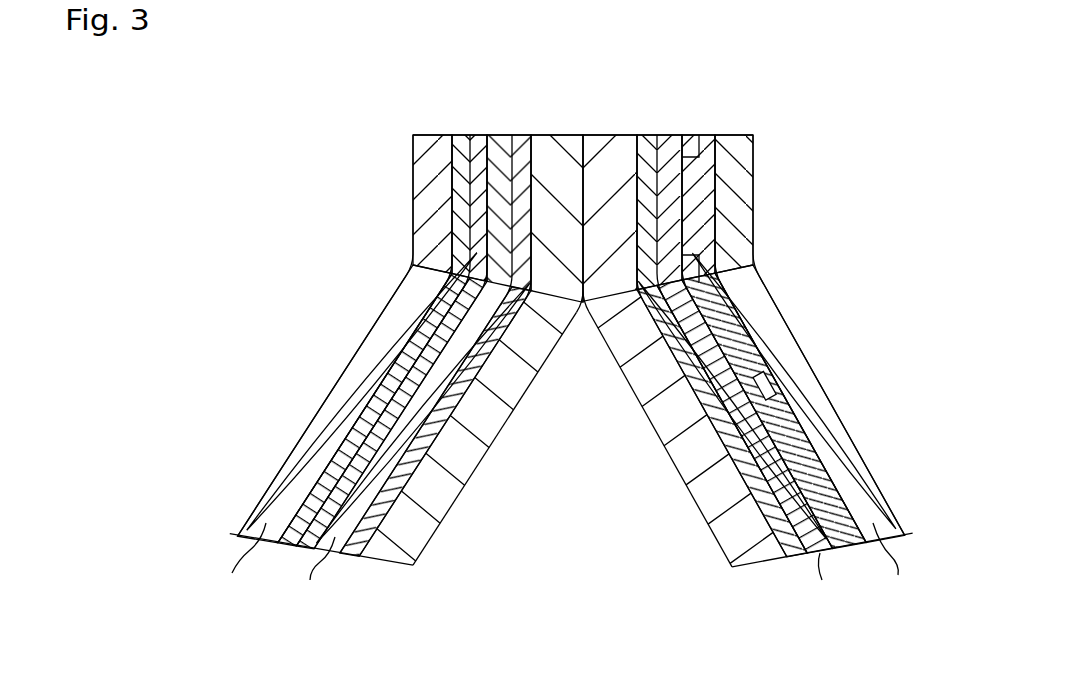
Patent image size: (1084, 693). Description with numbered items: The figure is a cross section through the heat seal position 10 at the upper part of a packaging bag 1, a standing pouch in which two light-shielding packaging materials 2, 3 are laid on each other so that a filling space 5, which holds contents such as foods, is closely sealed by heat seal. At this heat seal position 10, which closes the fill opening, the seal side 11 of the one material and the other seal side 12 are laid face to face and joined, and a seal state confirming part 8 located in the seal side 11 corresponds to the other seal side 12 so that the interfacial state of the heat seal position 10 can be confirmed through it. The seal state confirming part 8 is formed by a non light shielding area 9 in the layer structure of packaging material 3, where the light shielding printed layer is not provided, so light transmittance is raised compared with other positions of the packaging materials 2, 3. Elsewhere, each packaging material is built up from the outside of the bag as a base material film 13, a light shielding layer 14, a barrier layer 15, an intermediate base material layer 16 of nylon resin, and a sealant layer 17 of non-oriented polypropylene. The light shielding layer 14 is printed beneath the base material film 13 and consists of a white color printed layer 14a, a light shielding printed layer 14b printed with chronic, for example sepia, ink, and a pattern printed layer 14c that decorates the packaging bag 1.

The packaging bag 1 is at (335, 217).
The packaging material 2 is at (278, 430).
The packaging material 3 is at (873, 427).
The filling space 5 is at (585, 531).
The seal state confirming part 8 is at (757, 202).
The non light shielding area 9 is at (713, 177).
The heat seal position 10 is at (413, 173).
The seal side 11 is at (753, 140).
The seal side 12 is at (413, 141).
The base material film 13 is at (568, 566).
The light shielding layer 14 is at (487, 126).
The white color printed layer 14a is at (403, 343).
The light shielding printed layer 14b is at (410, 298).
The pattern printed layer 14c is at (367, 403).
The barrier layer 15 is at (571, 578).
The intermediate base material layer 16 is at (393, 487).
The sealant layer 17 is at (462, 462).